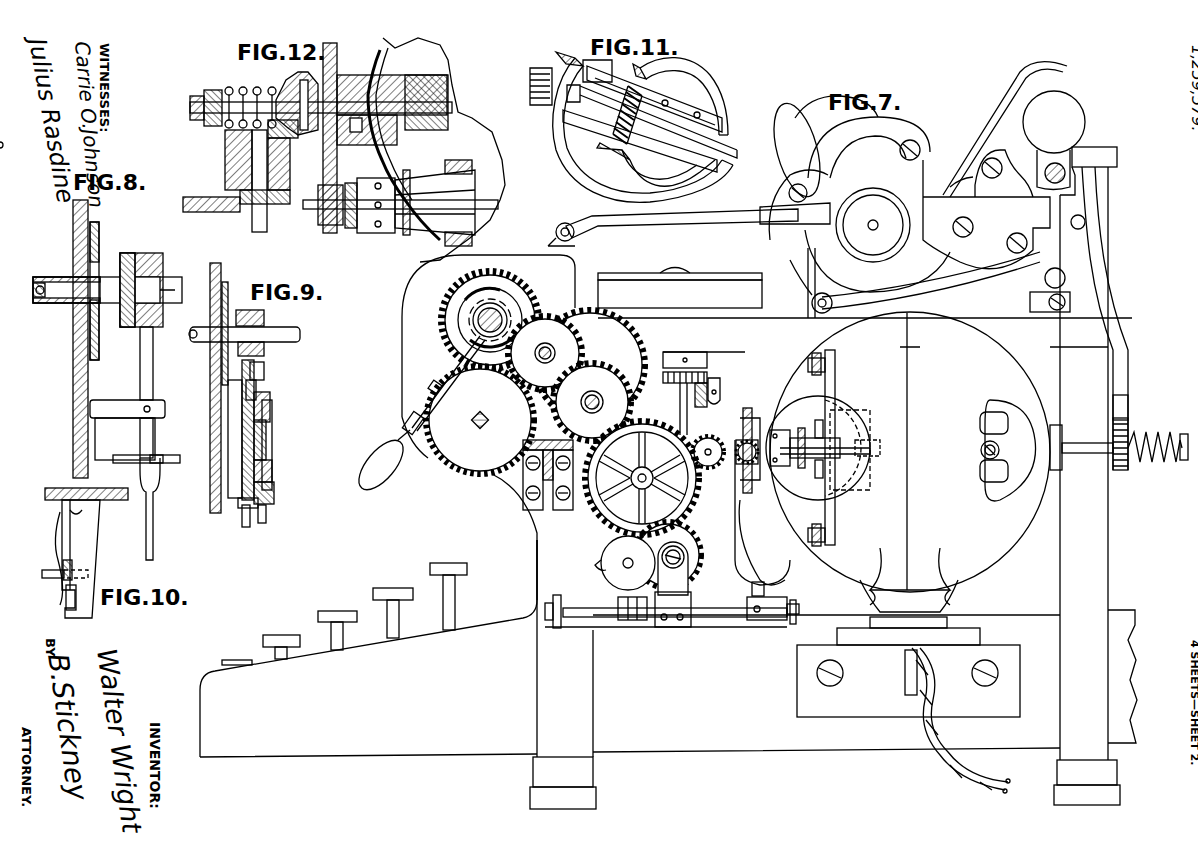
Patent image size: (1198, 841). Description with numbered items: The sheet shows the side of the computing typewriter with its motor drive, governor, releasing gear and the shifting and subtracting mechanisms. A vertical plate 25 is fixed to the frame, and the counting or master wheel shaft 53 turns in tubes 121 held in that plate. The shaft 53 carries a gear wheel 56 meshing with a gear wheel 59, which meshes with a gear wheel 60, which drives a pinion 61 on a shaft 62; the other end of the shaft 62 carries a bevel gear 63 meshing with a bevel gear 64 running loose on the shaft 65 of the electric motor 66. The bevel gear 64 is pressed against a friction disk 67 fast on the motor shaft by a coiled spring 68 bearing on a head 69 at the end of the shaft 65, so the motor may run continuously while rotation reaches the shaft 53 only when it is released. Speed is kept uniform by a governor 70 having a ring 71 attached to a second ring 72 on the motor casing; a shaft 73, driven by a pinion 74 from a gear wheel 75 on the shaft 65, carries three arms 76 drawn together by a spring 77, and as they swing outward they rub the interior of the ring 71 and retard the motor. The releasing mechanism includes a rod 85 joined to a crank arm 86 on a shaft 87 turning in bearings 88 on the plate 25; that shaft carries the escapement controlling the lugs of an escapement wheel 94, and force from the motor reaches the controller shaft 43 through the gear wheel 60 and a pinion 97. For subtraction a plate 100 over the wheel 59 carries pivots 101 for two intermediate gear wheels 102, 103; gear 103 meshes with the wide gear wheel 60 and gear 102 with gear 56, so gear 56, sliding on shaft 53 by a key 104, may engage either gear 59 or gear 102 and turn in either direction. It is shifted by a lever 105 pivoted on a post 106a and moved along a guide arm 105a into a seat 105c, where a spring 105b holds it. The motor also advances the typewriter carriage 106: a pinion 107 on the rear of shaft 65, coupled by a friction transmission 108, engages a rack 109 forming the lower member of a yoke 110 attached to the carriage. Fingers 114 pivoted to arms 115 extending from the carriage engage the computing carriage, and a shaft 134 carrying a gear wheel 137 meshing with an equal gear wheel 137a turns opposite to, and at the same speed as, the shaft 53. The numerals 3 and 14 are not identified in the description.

In FIG. 7, the keys 3 is at (443, 612).
In FIG. 7, the bracket 14 is at (780, 398).
In FIG. 8, the vertical plate 25 is at (73, 378).
In FIG. 10, the vertical plate 25 is at (60, 490).
In FIG. 9, the vertical plate 25 is at (216, 513).
In FIG. 7, the vertical plate 25 is at (402, 368).
In FIG. 7, the controller shaft 43 is at (673, 568).
In FIG. 8, the counting shaft 53 is at (48, 285).
In FIG. 9, the counting shaft 53 is at (194, 342).
In FIG. 7, the counting shaft 53 is at (478, 322).
In FIG. 8, the gear wheel 56 is at (133, 258).
In FIG. 7, the gear wheel 56 is at (535, 300).
In FIG. 9, the gear wheel 59 is at (230, 400).
In FIG. 7, the gear wheel 59 is at (587, 365).
In FIG. 9, the gear wheel 60 is at (258, 518).
In FIG. 7, the gear wheel 60 is at (593, 510).
In FIG. 7, the pinion 61 is at (716, 466).
In FIG. 12, the shaft 62 is at (256, 226).
In FIG. 7, the shaft 62 is at (708, 400).
In FIG. 12, the bevel gear 63 is at (225, 166).
In FIG. 7, the bevel gear 63 is at (700, 395).
In FIG. 12, the bevel gear 64 is at (295, 140).
In FIG. 7, the bevel gear 64 is at (741, 465).
In FIG. 12, the motor shaft 65 is at (452, 108).
In FIG. 7, the motor shaft 65 is at (1090, 455).
In FIG. 12, the electric motor 66 is at (500, 168).
In FIG. 7, the electric motor 66 is at (910, 462).
In FIG. 12, the friction disk 67 is at (306, 132).
In FIG. 12, the coiled spring 68 is at (228, 88).
In FIG. 12, the head 69 is at (210, 126).
In FIG. 12, the governor 70 is at (375, 230).
In FIG. 7, the governor 70 is at (796, 438).
In FIG. 12, the ring 71 is at (446, 164).
In FIG. 11, the ring 71 is at (666, 62).
In FIG. 11, the second ring 72 is at (574, 57).
In FIG. 12, the governor shaft 73 is at (310, 208).
In FIG. 11, the governor shaft 73 is at (665, 128).
In FIG. 12, the pinion 74 is at (334, 220).
In FIG. 11, the pinion 74 is at (540, 105).
In FIG. 12, the gear wheel 75 is at (337, 60).
In FIG. 7, the gear wheel 75 is at (755, 492).
In FIG. 12, the arms 76 is at (478, 172).
In FIG. 11, the arms 76 is at (722, 122).
In FIG. 7, the arms 76 is at (800, 460).
In FIG. 12, the spring 77 is at (406, 172).
In FIG. 11, the spring 77 is at (645, 100).
In FIG. 7, the spring 77 is at (802, 428).
In FIG. 7, the rod 85 is at (760, 582).
In FIG. 7, the crank arm 86 is at (789, 602).
In FIG. 7, the shaft 87 is at (712, 618).
In FIG. 7, the bearings 88 is at (558, 594).
In FIG. 7, the escapement wheel 94 is at (615, 577).
In FIG. 7, the pinion 97 is at (695, 552).
In FIG. 9, the plate 100 is at (270, 402).
In FIG. 9, the pivots 101 is at (272, 468).
In FIG. 9, the intermediate gear wheel 102 is at (268, 445).
In FIG. 7, the intermediate gear wheel 102 is at (572, 340).
In FIG. 9, the intermediate gear wheel 103 is at (272, 490).
In FIG. 7, the intermediate gear wheel 103 is at (600, 378).
In FIG. 8, the key 104 is at (165, 285).
In FIG. 9, the key 104 is at (268, 330).
In FIG. 8, the lever 105 is at (140, 438).
In FIG. 10, the lever 105 is at (52, 580).
In FIG. 9, the lever 105 is at (258, 355).
In FIG. 7, the lever 105 is at (381, 463).
In FIG. 8, the guide arm 105a is at (172, 466).
In FIG. 10, the guide arm 105a is at (72, 568).
In FIG. 7, the guide arm 105a is at (412, 440).
In FIG. 8, the spring 105b is at (165, 455).
In FIG. 10, the spring 105b is at (58, 520).
In FIG. 10, the seat 105c is at (78, 600).
In FIG. 7, the typewriter carriage 106 is at (937, 215).
In FIG. 8, the post 106a is at (127, 372).
In FIG. 7, the post 106a is at (432, 388).
In FIG. 7, the pinion 107 is at (1120, 470).
In FIG. 7, the friction transmission 108 is at (1140, 432).
In FIG. 7, the rack 109 is at (1113, 410).
In FIG. 7, the yoke 110 is at (1102, 325).
In FIG. 7, the fingers 114 is at (578, 222).
In FIG. 7, the arms 115 is at (684, 222).
In FIG. 8, the tubes 121 is at (58, 300).
In FIG. 9, the tubes 121 is at (300, 335).
In FIG. 7, the shaft 134 is at (478, 428).
In FIG. 7, the gear wheel 137 is at (458, 465).
In FIG. 8, the gear wheel 137a is at (90, 230).
In FIG. 9, the gear wheel 137a is at (226, 282).
In FIG. 7, the gear wheel 137a is at (415, 285).